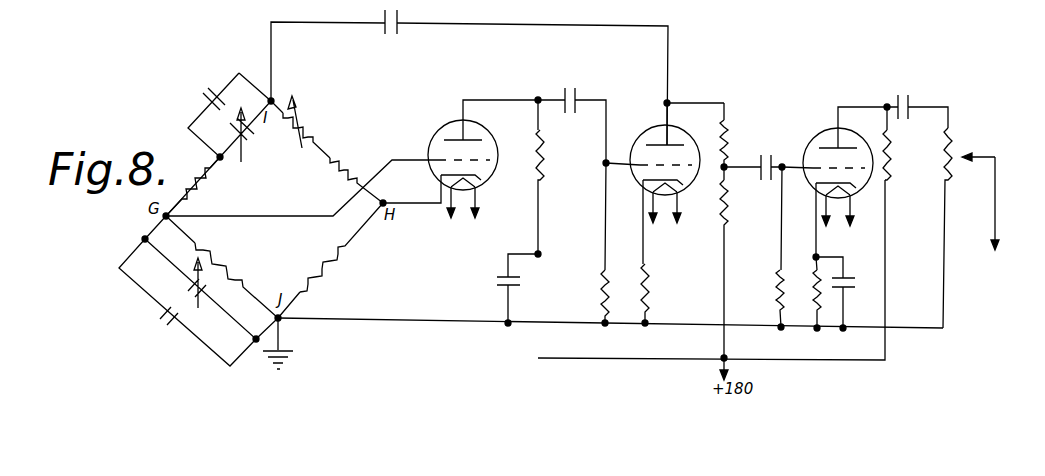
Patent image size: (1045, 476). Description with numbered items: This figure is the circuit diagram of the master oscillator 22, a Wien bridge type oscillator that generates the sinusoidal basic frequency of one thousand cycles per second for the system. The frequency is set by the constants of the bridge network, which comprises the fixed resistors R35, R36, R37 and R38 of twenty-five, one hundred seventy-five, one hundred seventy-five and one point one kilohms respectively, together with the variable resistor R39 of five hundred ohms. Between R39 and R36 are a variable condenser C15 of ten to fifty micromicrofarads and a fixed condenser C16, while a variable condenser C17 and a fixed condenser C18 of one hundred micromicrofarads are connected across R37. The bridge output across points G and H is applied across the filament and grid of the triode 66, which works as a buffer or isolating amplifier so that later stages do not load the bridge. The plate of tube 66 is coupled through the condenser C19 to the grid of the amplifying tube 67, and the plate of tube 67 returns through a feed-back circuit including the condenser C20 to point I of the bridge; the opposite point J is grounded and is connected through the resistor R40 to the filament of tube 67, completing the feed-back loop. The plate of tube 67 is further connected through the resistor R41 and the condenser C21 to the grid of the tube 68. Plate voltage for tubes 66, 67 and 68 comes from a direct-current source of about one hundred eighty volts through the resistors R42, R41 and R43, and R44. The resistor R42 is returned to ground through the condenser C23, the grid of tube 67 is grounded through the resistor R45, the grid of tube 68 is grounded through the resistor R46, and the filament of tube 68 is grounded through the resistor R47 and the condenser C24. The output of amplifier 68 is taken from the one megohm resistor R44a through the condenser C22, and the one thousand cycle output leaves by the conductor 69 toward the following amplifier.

The triode 66 is at (438, 134).
The amplifying tube 67 is at (650, 134).
The tube 68 is at (821, 131).
The master oscillator 22 is at (750, 82).
The conductor 69 is at (991, 201).
The variable condenser C15 is at (250, 131).
The fixed condenser C16 is at (198, 97).
The variable condenser C17 is at (200, 289).
The fixed condenser C18 is at (171, 329).
The condenser C19 is at (572, 116).
The condenser C20 is at (395, 34).
The condenser C21 is at (753, 179).
The condenser C22 is at (917, 101).
The condenser C23 is at (502, 288).
The condenser C24 is at (852, 292).
The fixed resistor R35 is at (344, 180).
The fixed resistor R36 is at (202, 186).
The fixed resistor R37 is at (222, 267).
The fixed resistor R38 is at (330, 260).
The variable resistor R39 is at (303, 127).
The resistor R40 is at (662, 293).
The resistor R41 is at (741, 135).
The resistor R42 is at (558, 177).
The resistor R43 is at (741, 262).
The resistor R44 is at (906, 143).
The resistor R44a is at (970, 227).
The resistor R45 is at (585, 243).
The resistor R46 is at (762, 247).
The resistor R47 is at (805, 292).